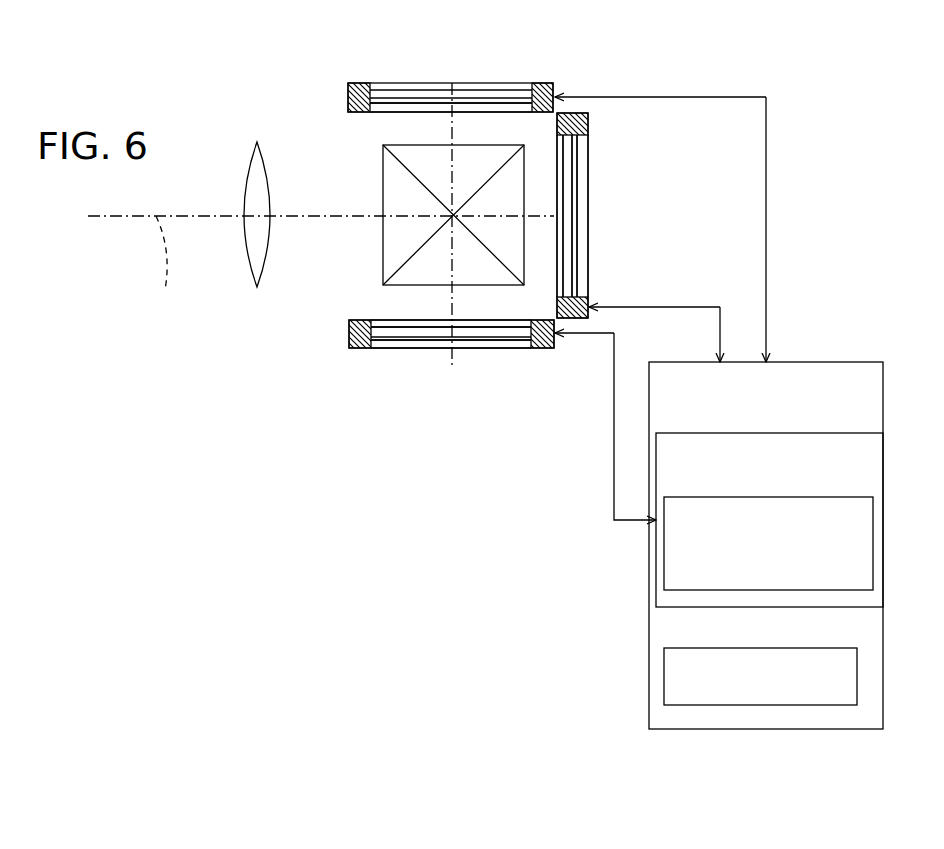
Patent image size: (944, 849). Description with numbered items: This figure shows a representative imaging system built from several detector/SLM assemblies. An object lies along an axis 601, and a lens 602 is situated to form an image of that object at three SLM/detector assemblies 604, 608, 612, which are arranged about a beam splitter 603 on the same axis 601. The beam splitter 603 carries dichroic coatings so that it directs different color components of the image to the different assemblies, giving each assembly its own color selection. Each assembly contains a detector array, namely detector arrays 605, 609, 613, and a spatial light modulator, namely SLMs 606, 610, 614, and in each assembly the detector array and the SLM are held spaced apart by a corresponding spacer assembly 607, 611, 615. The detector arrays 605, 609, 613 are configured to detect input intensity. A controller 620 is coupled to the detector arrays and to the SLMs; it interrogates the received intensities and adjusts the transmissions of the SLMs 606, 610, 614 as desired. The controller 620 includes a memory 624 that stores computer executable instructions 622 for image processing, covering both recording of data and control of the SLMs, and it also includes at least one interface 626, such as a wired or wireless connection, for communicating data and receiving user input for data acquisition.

The axis 601 is at (145, 275).
The lens 602 is at (257, 287).
The beam splitter 603 is at (383, 183).
The SLM/detector assembly 604 is at (427, 359).
The detector array 605 is at (488, 349).
The SLM 606 is at (397, 320).
The spacer assembly 607 is at (547, 350).
The SLM/detector assembly 608 is at (607, 215).
The detector array 609 is at (588, 197).
The SLM 610 is at (553, 282).
The spacer assembly 611 is at (587, 120).
The SLM/detector assembly 612 is at (403, 79).
The detector array 613 is at (512, 83).
The SLM 614 is at (408, 113).
The spacer assembly 615 is at (348, 100).
The controller 620 is at (766, 545).
The computer executable instructions 622 is at (768, 543).
The memory 624 is at (769, 520).
The interface 626 is at (760, 676).